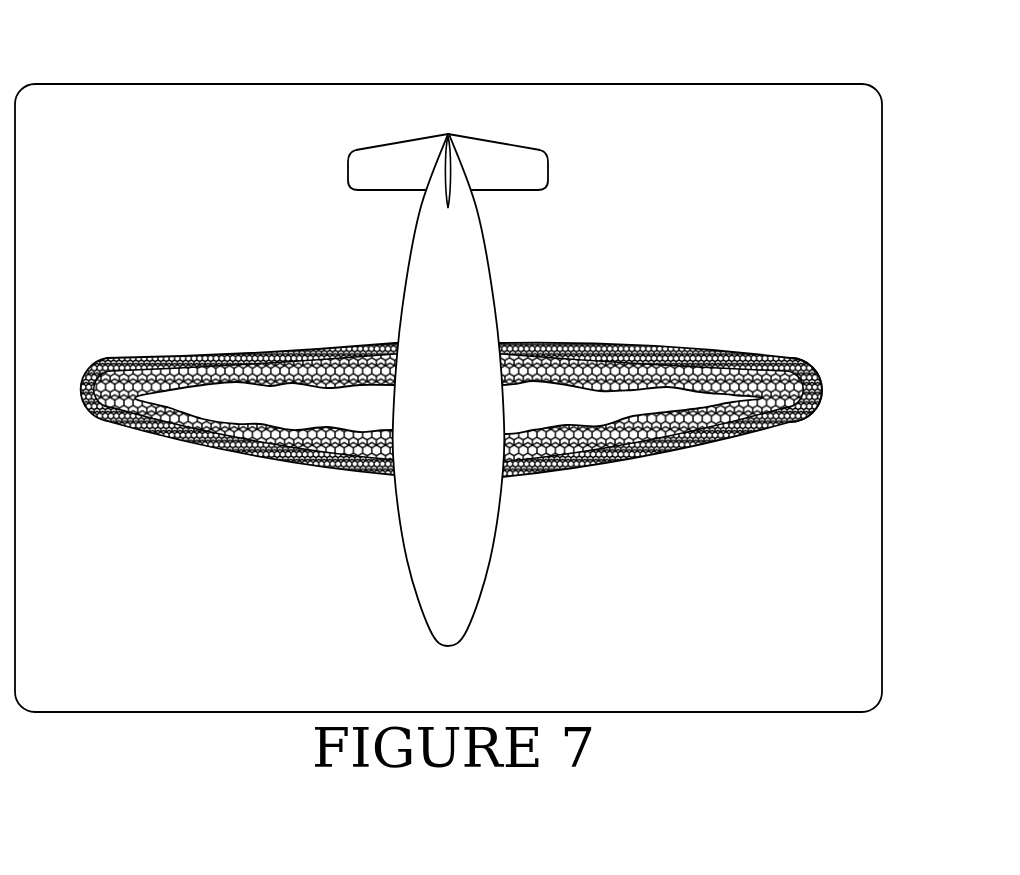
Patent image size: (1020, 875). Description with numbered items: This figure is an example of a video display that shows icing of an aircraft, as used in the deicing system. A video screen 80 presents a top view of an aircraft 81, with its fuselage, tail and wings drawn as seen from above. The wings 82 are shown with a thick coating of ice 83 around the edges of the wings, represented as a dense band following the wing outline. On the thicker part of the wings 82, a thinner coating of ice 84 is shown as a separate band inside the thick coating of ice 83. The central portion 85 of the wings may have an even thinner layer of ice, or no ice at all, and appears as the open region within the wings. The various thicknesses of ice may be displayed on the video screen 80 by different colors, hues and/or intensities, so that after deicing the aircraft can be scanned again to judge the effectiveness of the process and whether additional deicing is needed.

The video screen 80 is at (685, 84).
The aircraft 81 is at (405, 288).
The wings 82 is at (523, 475).
The thick coating of ice 83 is at (647, 452).
The thinner coating of ice 84 is at (785, 407).
The central portion 85 is at (594, 400).